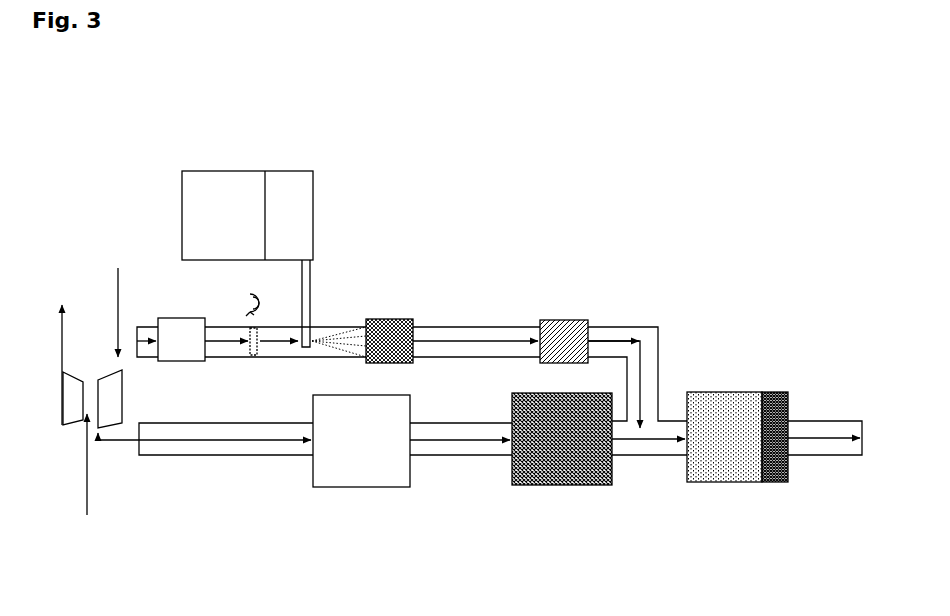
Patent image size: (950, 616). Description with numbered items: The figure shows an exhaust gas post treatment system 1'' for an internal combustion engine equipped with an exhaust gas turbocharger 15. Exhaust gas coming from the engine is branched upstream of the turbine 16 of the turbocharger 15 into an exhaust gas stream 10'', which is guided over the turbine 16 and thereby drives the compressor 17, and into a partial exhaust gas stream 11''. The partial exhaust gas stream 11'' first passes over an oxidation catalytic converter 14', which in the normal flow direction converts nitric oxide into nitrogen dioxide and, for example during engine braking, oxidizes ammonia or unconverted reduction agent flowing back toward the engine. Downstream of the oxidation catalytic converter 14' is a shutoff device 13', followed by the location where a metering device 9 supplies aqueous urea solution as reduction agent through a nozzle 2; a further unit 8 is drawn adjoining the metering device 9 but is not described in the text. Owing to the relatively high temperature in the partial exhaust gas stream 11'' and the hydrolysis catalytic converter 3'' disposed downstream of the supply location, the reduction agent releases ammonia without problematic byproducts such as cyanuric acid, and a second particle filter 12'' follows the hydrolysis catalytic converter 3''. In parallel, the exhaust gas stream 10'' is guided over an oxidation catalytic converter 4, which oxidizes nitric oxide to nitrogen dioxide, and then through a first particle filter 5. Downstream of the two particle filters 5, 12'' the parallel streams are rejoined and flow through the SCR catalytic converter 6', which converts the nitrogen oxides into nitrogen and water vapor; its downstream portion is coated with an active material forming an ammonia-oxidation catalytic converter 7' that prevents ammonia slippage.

The gas analyzer arrangement 1'' is at (103, 146).
The nozzle 2 is at (322, 342).
The hydrolysis catalytic converter 3'' is at (412, 300).
The oxidation catalytic converter 4 is at (360, 463).
The first particle filter 5 is at (553, 473).
The SCR catalytic converter 6' is at (724, 403).
The NH3-oxidation catalytic converter 7' is at (788, 403).
The control unit 8 is at (218, 188).
The metering device 9 is at (299, 228).
The exhaust gas stream 10'' is at (392, 394).
The partial exhaust gas stream 11'' is at (429, 330).
The second particle filter 12'' is at (586, 301).
The shutoff device 13' is at (229, 317).
The oxidation catalytic converter 14' is at (177, 316).
The exhaust gas turbocharger 15 is at (88, 346).
The turbine 16 is at (101, 370).
The compressor 17 is at (78, 407).